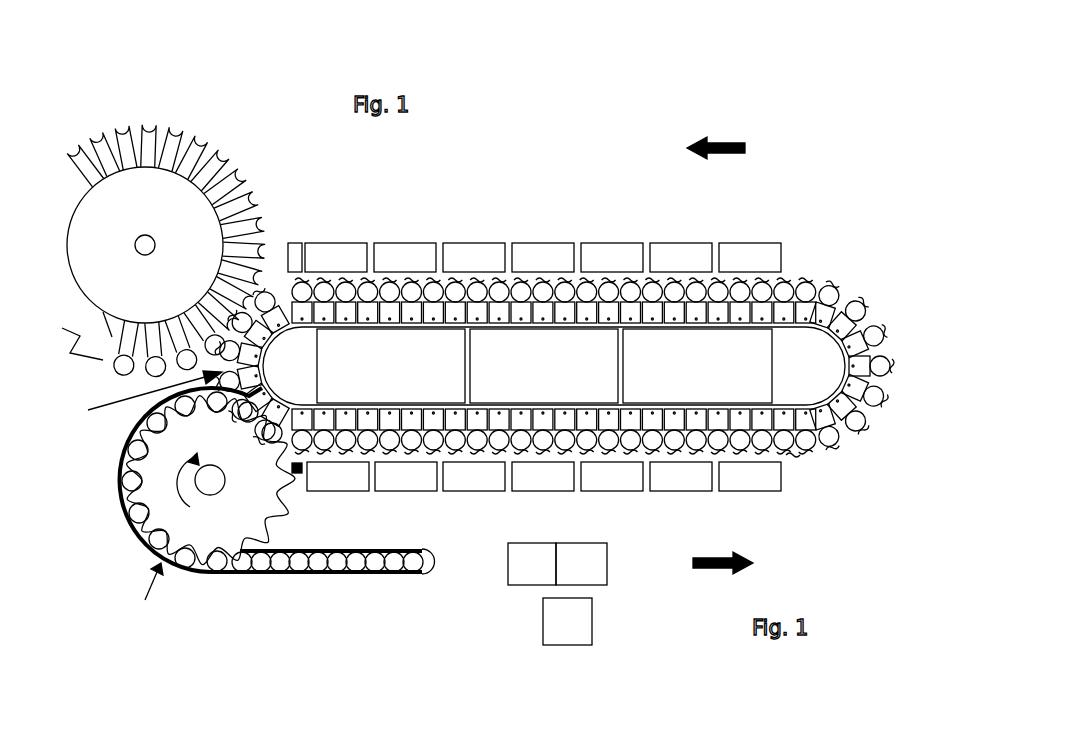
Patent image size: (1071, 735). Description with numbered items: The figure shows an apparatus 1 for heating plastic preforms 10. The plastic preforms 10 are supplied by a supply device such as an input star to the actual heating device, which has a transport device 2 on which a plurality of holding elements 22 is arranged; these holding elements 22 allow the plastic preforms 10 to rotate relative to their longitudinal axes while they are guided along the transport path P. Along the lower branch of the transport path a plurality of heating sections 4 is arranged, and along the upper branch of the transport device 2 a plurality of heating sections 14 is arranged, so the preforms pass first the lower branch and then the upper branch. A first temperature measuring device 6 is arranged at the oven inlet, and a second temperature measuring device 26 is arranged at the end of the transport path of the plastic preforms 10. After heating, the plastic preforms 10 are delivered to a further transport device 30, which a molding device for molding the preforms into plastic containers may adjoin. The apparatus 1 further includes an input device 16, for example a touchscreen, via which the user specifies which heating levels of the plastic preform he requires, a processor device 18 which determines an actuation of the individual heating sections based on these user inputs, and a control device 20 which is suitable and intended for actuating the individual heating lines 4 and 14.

The apparatus 1 is at (601, 122).
The transport device 2 is at (817, 375).
The heating sections 4 is at (353, 475).
The first temperature measuring device 6 is at (297, 478).
The plastic preforms 10 is at (422, 572).
The heating sections 14 is at (344, 251).
The input device 16 is at (532, 564).
The processor device 18 is at (852, 322).
The control device 20 is at (567, 621).
The holding elements 22 is at (793, 446).
The second temperature measuring device 26 is at (292, 243).
The further transport device 30 is at (199, 90).